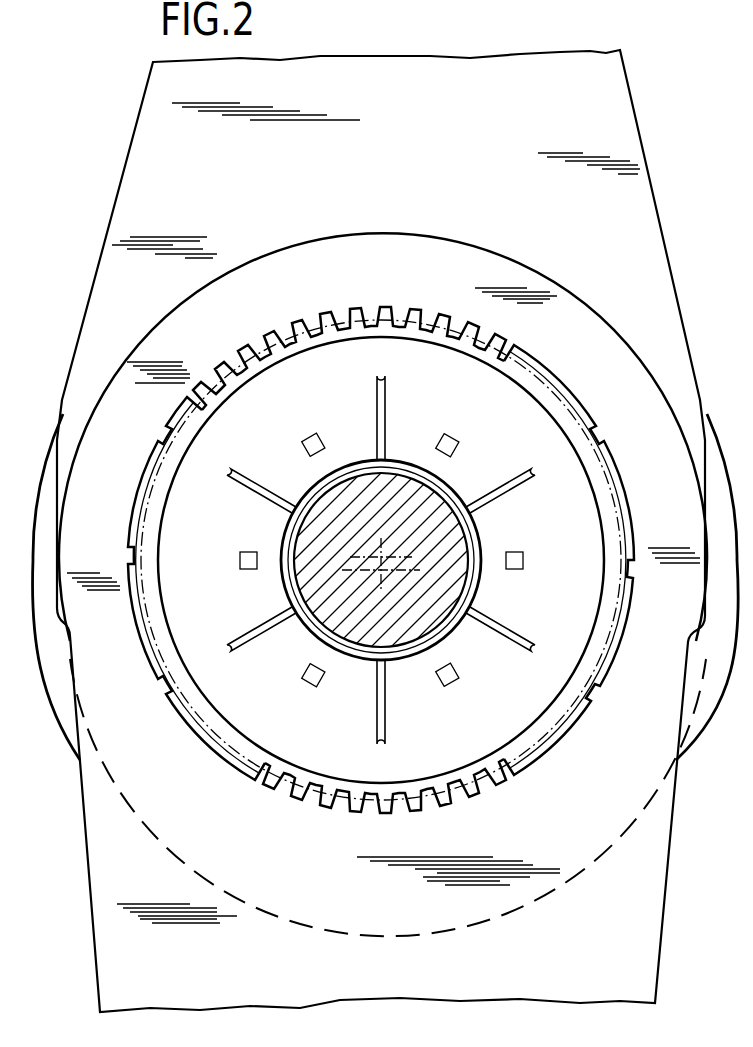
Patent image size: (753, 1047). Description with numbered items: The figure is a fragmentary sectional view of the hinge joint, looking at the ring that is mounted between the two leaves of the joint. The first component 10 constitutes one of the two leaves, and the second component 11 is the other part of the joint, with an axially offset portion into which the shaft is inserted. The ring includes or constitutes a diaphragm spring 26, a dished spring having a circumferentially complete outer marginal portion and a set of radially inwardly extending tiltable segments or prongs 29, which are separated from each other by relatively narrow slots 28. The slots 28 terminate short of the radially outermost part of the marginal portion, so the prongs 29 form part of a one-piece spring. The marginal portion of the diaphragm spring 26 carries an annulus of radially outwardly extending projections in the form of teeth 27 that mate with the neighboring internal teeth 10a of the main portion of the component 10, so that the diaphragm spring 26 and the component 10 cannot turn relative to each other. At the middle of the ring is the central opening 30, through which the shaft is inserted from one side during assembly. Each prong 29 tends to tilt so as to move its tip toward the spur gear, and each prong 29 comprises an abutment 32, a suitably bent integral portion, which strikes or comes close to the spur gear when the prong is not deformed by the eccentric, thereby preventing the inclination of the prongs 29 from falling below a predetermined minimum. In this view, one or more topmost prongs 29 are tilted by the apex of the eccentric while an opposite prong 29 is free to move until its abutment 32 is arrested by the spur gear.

The first component 10 is at (120, 872).
The internal teeth 10a is at (495, 343).
The second component 11 is at (145, 197).
The diaphragm spring 26 is at (436, 377).
The teeth 27 is at (387, 310).
The slots 28 is at (235, 466).
The prongs 29 is at (286, 441).
The central opening 30 is at (310, 633).
The abutment 32 is at (450, 436).